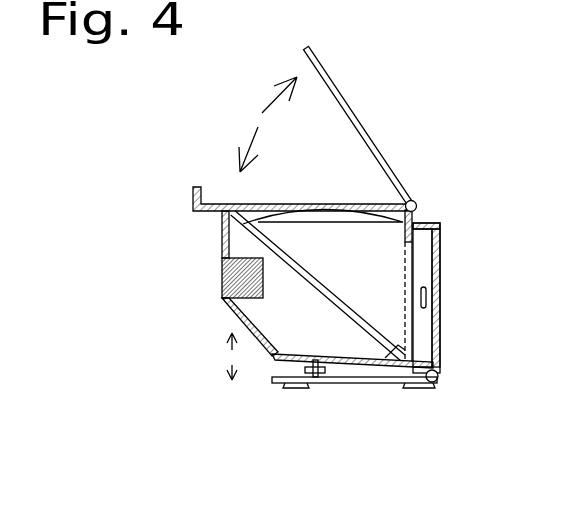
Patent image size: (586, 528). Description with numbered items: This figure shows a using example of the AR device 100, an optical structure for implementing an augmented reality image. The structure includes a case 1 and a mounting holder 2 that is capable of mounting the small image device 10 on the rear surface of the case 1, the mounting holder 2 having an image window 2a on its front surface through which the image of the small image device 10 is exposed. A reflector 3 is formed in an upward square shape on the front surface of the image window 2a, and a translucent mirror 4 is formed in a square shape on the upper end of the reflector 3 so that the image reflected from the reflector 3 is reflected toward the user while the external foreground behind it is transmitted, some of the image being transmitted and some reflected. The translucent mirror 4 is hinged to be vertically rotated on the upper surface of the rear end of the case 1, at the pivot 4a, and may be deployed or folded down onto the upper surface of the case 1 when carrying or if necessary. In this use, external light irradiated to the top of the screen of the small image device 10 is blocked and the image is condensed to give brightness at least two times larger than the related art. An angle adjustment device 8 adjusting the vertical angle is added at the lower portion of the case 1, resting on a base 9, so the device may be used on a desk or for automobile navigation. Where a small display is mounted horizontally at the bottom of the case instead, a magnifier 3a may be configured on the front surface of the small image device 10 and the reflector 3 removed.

The AR device 100 is at (181, 280).
The case 1 is at (237, 236).
The mounting holder 2 is at (432, 360).
The image window 2a is at (403, 347).
The reflector 3 is at (356, 314).
The magnifier 3a is at (345, 220).
The translucent mirror 4 is at (355, 120).
The hinge pin 4a is at (417, 198).
The angle adjustment device 8 is at (322, 374).
The base 9 is at (293, 386).
The small image device 10 is at (425, 250).